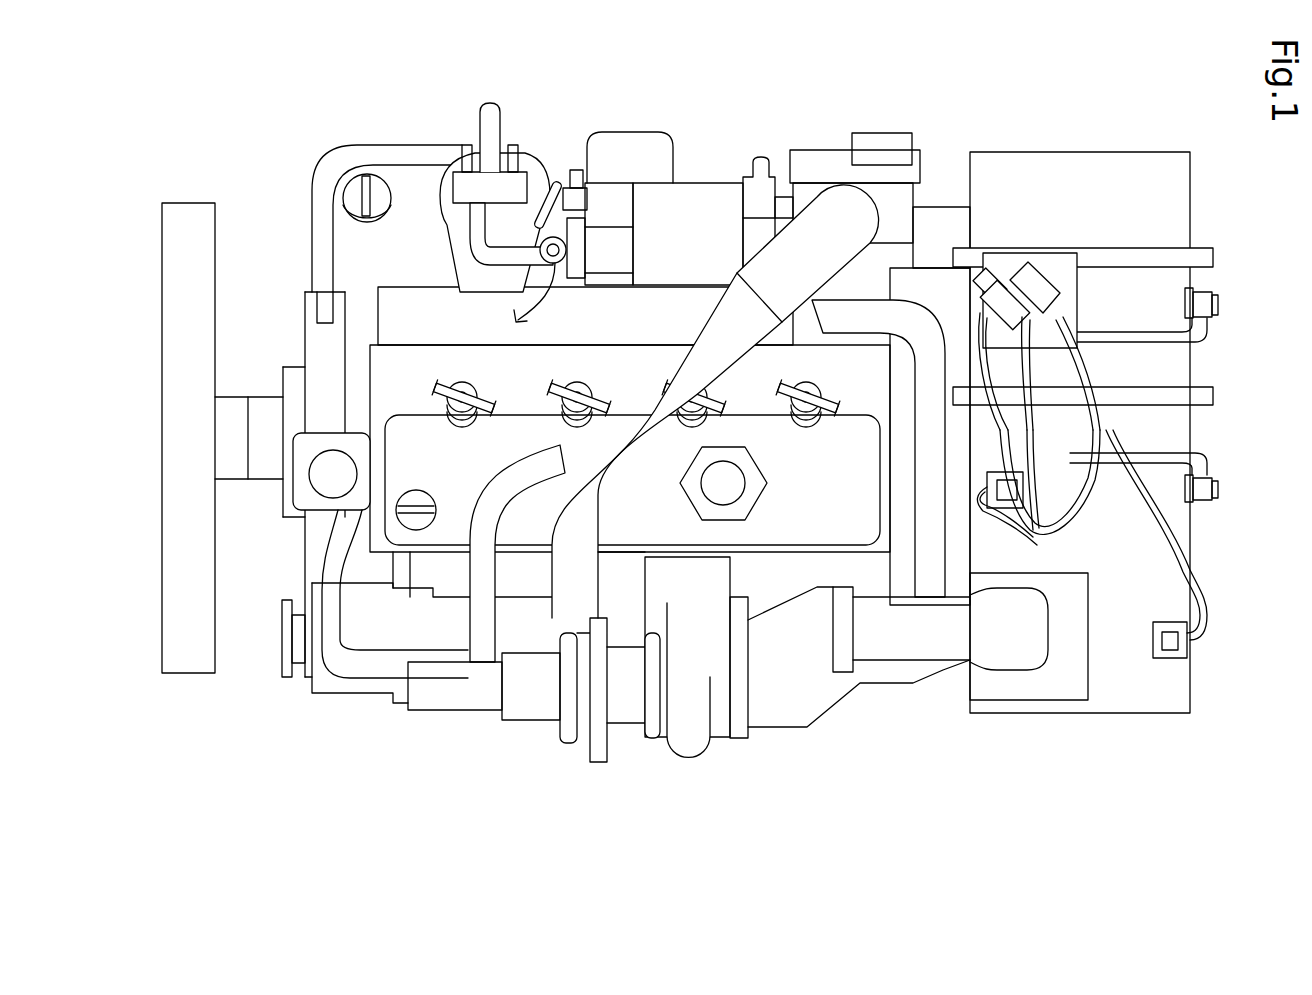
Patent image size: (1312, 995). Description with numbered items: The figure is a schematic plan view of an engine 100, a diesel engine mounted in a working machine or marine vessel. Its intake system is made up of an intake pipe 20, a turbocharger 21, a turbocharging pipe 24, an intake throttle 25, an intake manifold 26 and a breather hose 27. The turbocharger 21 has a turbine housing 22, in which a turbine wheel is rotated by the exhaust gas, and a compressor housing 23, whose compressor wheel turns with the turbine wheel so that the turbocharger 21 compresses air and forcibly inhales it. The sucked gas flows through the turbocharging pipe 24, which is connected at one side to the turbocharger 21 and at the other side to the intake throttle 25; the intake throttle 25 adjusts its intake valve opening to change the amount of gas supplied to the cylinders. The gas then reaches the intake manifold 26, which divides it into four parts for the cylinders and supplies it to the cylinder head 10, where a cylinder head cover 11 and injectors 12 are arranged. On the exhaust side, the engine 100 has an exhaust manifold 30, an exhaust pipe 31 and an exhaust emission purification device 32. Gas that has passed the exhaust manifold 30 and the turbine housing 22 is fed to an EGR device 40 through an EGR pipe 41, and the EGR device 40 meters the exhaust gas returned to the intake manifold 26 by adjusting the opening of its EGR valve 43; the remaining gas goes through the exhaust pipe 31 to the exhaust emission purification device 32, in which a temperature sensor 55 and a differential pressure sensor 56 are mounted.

The engine 100 is at (141, 132).
The cylinder head 10 is at (370, 417).
The intake manifold 26 is at (400, 298).
The injectors 12 is at (470, 383).
The EGR device 40 is at (741, 150).
The EGR valve 43 is at (753, 222).
The intake throttle 25 is at (903, 193).
The EGR pipe 41 is at (927, 567).
The turbocharging pipe 24 is at (613, 447).
The breather hose 27 is at (483, 635).
The intake pipe 20 is at (480, 703).
The exhaust manifold 30 is at (517, 632).
The compressor housing 23 is at (582, 780).
The turbocharger 21 is at (642, 757).
The turbine housing 22 is at (693, 752).
The cylinder head cover 11 is at (793, 528).
The exhaust pipe 31 is at (897, 650).
The exhaust emission purification device 32 is at (1203, 168).
The temperature sensor 55 is at (990, 282).
The differential pressure sensor 56 is at (1035, 280).